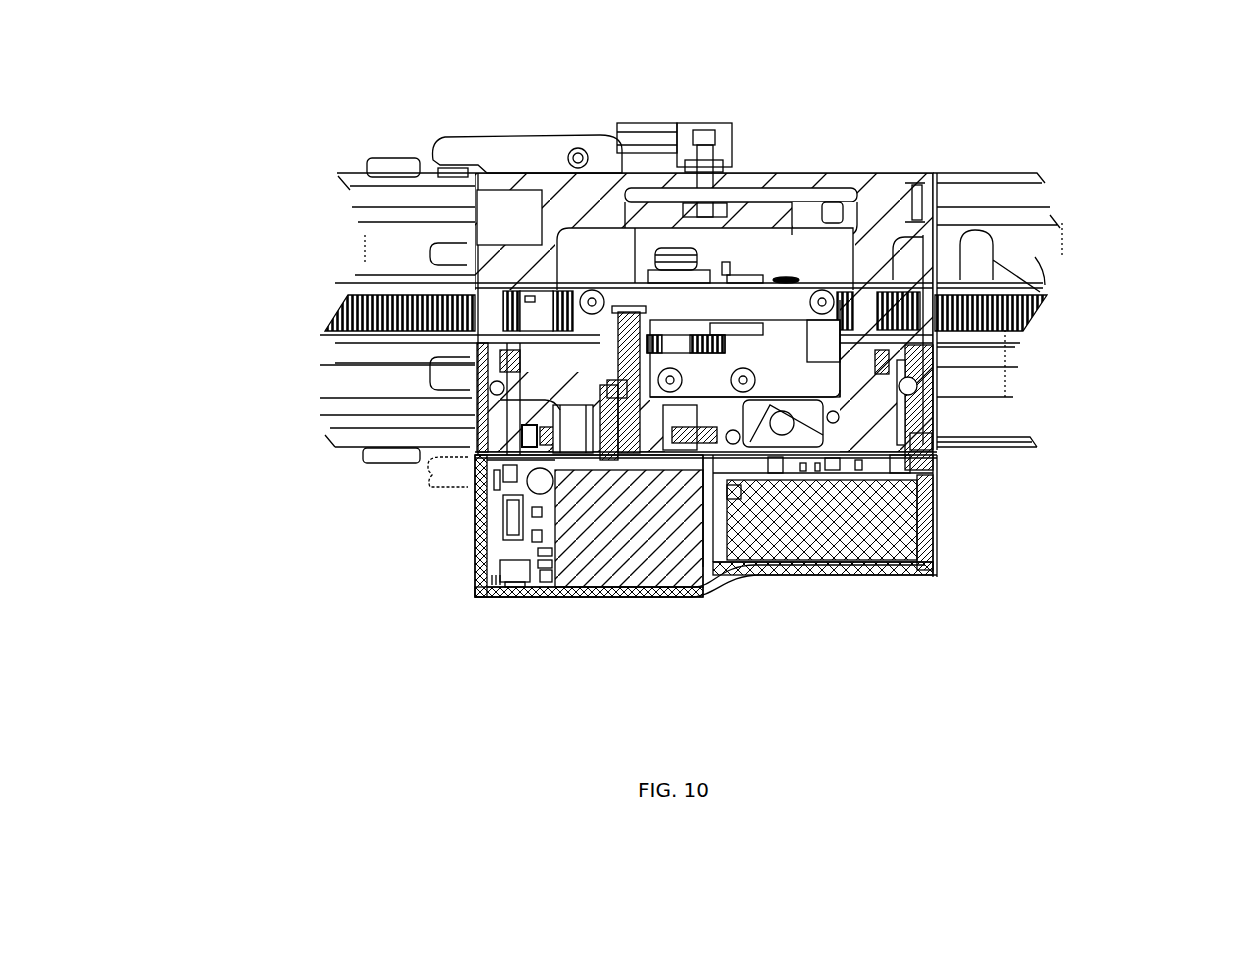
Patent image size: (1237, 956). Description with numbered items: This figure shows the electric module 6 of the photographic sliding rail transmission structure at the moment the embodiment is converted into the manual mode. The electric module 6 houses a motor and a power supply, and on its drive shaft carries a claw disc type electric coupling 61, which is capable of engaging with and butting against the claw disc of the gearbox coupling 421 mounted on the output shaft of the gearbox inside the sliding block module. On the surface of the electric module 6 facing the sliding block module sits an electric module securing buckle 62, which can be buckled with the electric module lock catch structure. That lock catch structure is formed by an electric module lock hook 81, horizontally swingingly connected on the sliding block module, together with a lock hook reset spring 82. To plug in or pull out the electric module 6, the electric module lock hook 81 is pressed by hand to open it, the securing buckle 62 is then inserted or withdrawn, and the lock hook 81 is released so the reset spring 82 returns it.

The gearbox coupling 421 is at (600, 420).
The lock hook reset spring 82 is at (500, 351).
The electric module lock hook 81 is at (478, 432).
The electric module securing buckle 62 is at (935, 445).
The electric coupling 61 is at (780, 540).
The electric module 6 is at (640, 547).